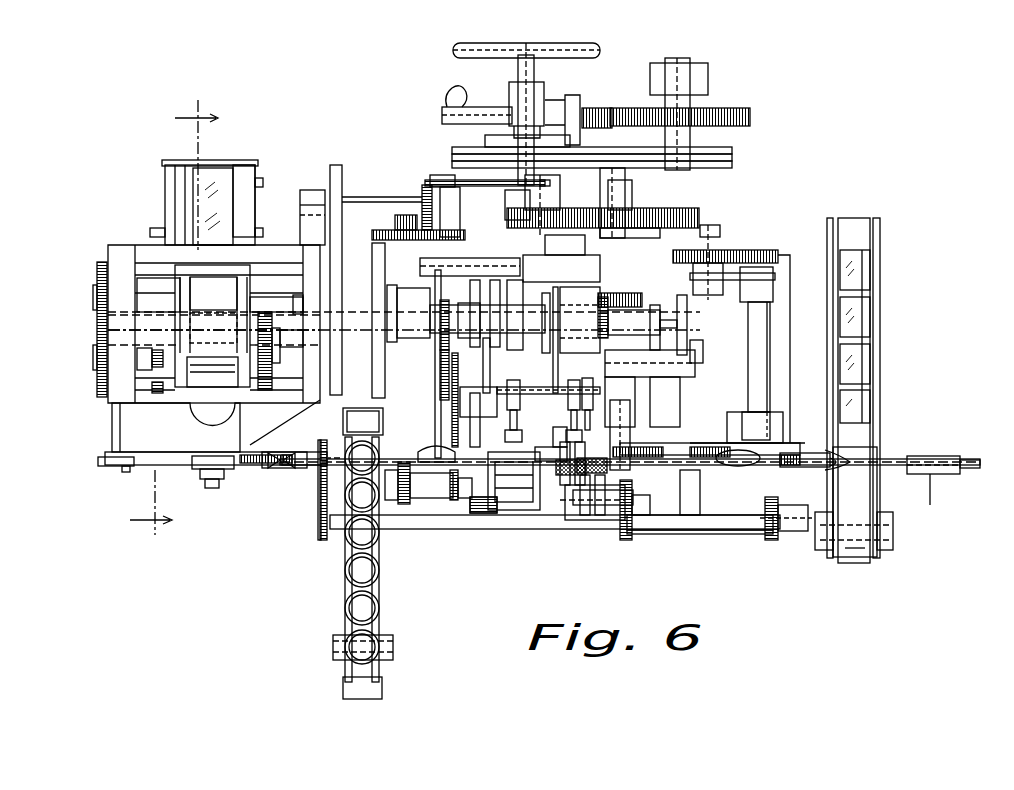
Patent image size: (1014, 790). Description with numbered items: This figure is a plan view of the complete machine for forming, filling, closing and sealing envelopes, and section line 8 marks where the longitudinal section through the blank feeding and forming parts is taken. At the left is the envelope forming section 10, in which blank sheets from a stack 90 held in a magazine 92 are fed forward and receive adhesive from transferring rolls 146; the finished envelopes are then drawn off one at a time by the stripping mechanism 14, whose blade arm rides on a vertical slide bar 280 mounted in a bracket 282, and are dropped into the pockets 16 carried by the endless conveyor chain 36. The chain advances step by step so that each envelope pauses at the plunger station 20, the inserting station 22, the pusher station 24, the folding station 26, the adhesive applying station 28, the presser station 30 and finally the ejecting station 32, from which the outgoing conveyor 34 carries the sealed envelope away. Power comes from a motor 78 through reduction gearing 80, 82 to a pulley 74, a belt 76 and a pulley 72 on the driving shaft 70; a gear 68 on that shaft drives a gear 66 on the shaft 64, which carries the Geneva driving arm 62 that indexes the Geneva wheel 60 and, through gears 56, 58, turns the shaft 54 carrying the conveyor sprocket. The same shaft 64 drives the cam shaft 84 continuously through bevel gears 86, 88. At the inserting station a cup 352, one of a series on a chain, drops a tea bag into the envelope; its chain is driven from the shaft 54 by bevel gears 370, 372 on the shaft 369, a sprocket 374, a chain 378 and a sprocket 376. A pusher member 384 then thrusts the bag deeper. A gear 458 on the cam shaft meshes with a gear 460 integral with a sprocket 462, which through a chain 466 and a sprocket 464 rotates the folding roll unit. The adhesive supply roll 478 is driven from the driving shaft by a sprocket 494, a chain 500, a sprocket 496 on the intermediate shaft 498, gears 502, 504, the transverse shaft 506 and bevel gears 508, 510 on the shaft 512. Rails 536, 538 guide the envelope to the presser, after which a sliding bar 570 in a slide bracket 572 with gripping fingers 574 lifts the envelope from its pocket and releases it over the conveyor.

The section line 8— 8 is at (161, 317).
The envelope forming section 10 is at (131, 200).
The stripping mechanism 14 is at (203, 480).
The pockets or holders 16 is at (265, 395).
The plunger station 20 is at (290, 475).
The article inserting station 22 is at (366, 399).
The pusher station 24 is at (432, 500).
The flap folding station 26 is at (515, 520).
The adhesive applying station 28 is at (594, 537).
The presser station 30 is at (667, 500).
The ejecting station 32 is at (862, 438).
The outgoing conveyor 34 is at (862, 238).
The conveyor chain 36 is at (262, 470).
The shaft 54 is at (768, 385).
The gear 56 is at (778, 252).
The gear 58 is at (760, 240).
The Geneva wheel 60 is at (772, 248).
The Geneva driving arm 62 is at (700, 228).
The shaft 64 is at (635, 200).
The gear 66 is at (695, 212).
The gear 68 is at (512, 222).
The driving shaft 70 is at (515, 92).
The pulley 72 is at (470, 140).
The pulley 74 is at (715, 148).
The belt 76 is at (625, 108).
The motor 78 is at (575, 140).
The reduction gearing 80 is at (598, 85).
The reduction gearing 82 is at (722, 108).
The cam shaft 84 is at (650, 330).
The bevel gear 86 is at (645, 300).
The bevel gear 88 is at (606, 345).
The stack of blank sheets 90 is at (228, 168).
The magazine 92 is at (250, 166).
The transferring rolls 146 is at (195, 345).
The slide bar 280 is at (195, 470).
The bracket 282 is at (170, 430).
The cup 352 is at (345, 640).
The shaft 369 is at (728, 530).
The bevel gear 370 is at (745, 510).
The bevel gear 372 is at (775, 540).
The sprocket 374 is at (330, 545).
The sprocket 376 is at (325, 452).
The chain 378 is at (320, 500).
The pusher member 384 is at (436, 426).
The gear 458 is at (468, 292).
The gear 460 is at (447, 348).
The sprocket 462 is at (480, 360).
The sprocket 464 is at (455, 500).
The chain 466 is at (455, 420).
The supply roll 478 is at (600, 520).
The sprocket 494 is at (545, 178).
The sprocket 496 is at (440, 178).
The intermediate shaft 498 is at (420, 190).
The chain 500 is at (478, 180).
The gear 502 is at (510, 259).
The gear 504 is at (398, 222).
The transversely extended shaft 506 is at (392, 232).
The bevel gear 508 is at (433, 500).
The bevel gear 510 is at (420, 505).
The shaft 512 is at (445, 500).
The rail 536 is at (566, 430).
The rail 538 is at (540, 510).
The sliding bar 570 is at (900, 460).
The slide bracket 572 is at (930, 505).
The fingers 574 is at (845, 455).